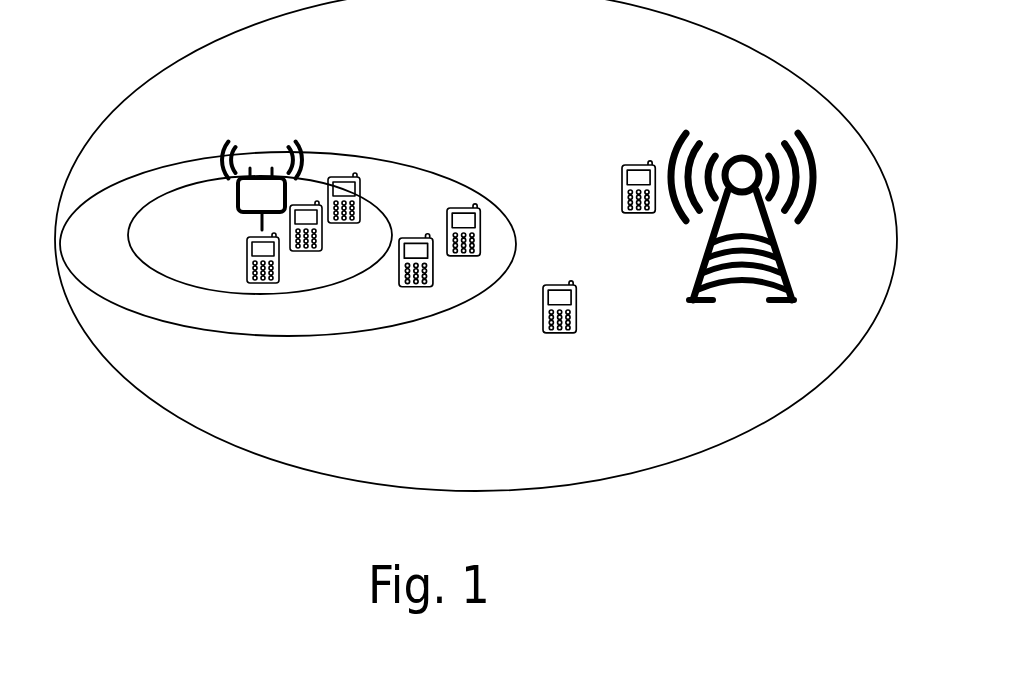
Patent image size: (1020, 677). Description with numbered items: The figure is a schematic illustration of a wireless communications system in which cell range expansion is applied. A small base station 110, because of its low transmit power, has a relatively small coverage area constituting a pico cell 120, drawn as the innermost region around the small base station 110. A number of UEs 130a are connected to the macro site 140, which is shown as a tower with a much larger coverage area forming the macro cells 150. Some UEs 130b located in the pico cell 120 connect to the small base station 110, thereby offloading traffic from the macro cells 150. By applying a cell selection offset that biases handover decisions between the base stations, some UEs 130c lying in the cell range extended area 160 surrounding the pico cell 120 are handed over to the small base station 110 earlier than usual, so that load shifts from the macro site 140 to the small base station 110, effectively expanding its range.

The small base station 110 is at (258, 166).
The pico cell 120 is at (227, 275).
The UEs connected to the macro site 130a is at (627, 222).
The UEs connected to the small base station 130b is at (350, 230).
The UEs handed over by CSO 130c is at (455, 259).
The macro site 140 is at (763, 145).
The macro cells 150 is at (330, 462).
The cell range extended area 160 is at (100, 285).